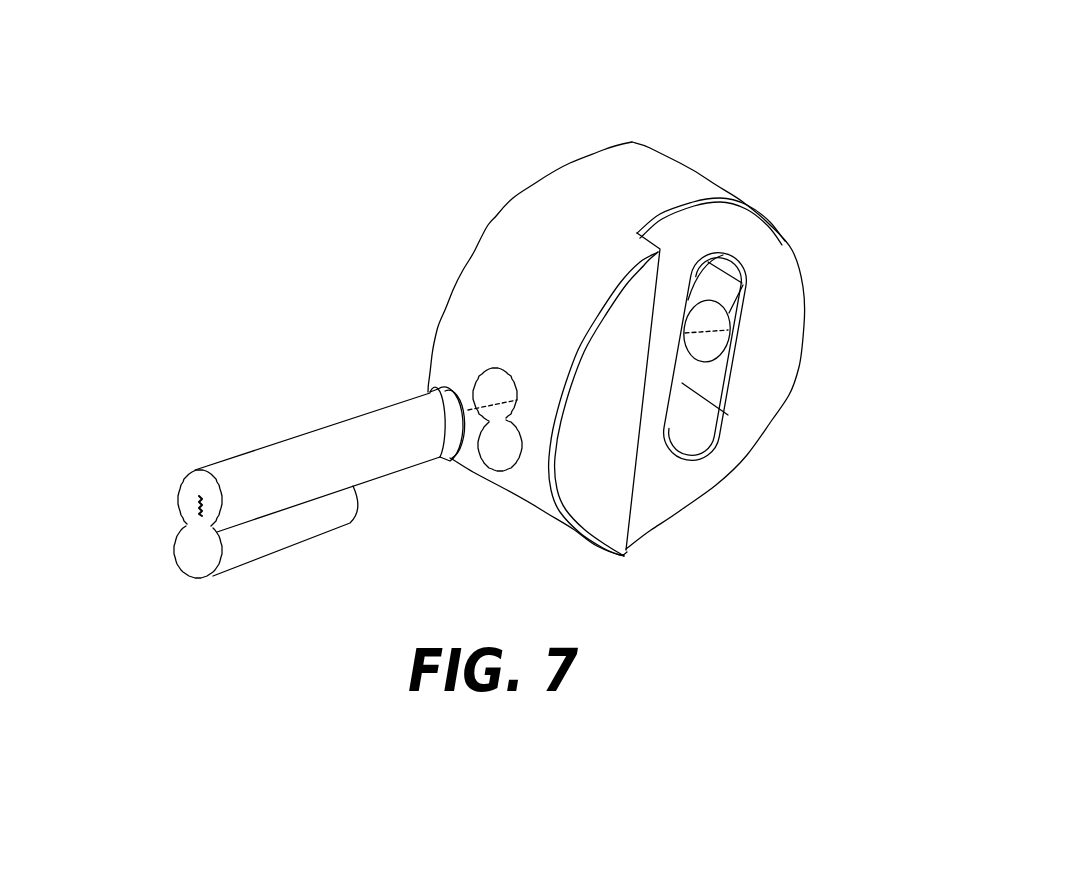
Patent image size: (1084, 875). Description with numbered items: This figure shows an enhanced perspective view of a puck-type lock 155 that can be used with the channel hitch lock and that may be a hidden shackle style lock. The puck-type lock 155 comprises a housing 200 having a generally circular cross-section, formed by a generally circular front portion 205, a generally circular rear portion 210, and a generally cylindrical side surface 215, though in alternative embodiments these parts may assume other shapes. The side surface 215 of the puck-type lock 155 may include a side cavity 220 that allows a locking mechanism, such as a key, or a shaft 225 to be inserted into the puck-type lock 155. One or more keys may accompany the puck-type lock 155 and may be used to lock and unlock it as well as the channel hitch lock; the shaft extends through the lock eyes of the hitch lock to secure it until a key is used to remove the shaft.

The puck-type lock 155 is at (492, 305).
The housing 200 is at (492, 299).
The front portion 205 is at (462, 216).
The rear portion 210 is at (686, 493).
The side surface 215 is at (466, 463).
The side cavity 220 is at (500, 370).
The shaft 225 is at (275, 476).